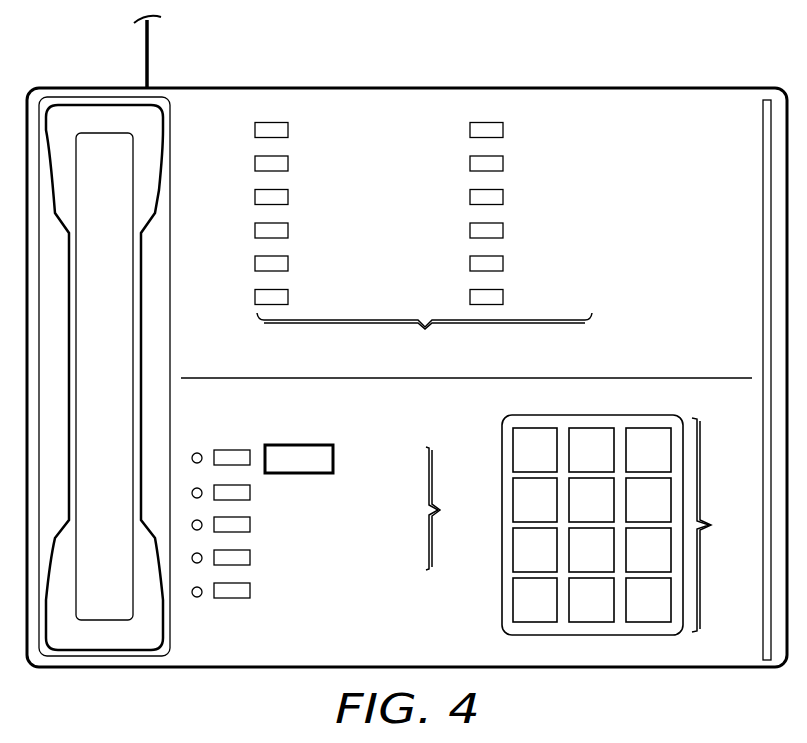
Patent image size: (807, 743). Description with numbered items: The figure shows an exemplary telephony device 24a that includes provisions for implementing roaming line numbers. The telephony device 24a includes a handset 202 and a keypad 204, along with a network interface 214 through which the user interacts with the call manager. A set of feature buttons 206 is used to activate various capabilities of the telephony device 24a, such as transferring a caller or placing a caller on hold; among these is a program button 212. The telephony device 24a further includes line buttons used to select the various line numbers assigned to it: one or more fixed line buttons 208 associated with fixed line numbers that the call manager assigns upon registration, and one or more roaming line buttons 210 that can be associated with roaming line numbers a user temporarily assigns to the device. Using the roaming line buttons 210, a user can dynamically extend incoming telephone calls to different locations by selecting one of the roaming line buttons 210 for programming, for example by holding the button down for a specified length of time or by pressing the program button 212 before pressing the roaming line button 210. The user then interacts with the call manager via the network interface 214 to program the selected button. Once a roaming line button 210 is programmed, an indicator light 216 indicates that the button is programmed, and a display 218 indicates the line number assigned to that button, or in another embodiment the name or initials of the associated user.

The telephony device 24a is at (570, 88).
The network interface 214 is at (147, 50).
The handset 202 is at (102, 640).
The feature buttons 206 is at (423, 240).
The program button 212 is at (255, 297).
The indicator light 216 is at (200, 452).
The display 218 is at (300, 444).
The roaming line buttons 210 is at (338, 509).
The fixed line buttons 208 is at (228, 600).
The keypad 204 is at (626, 525).